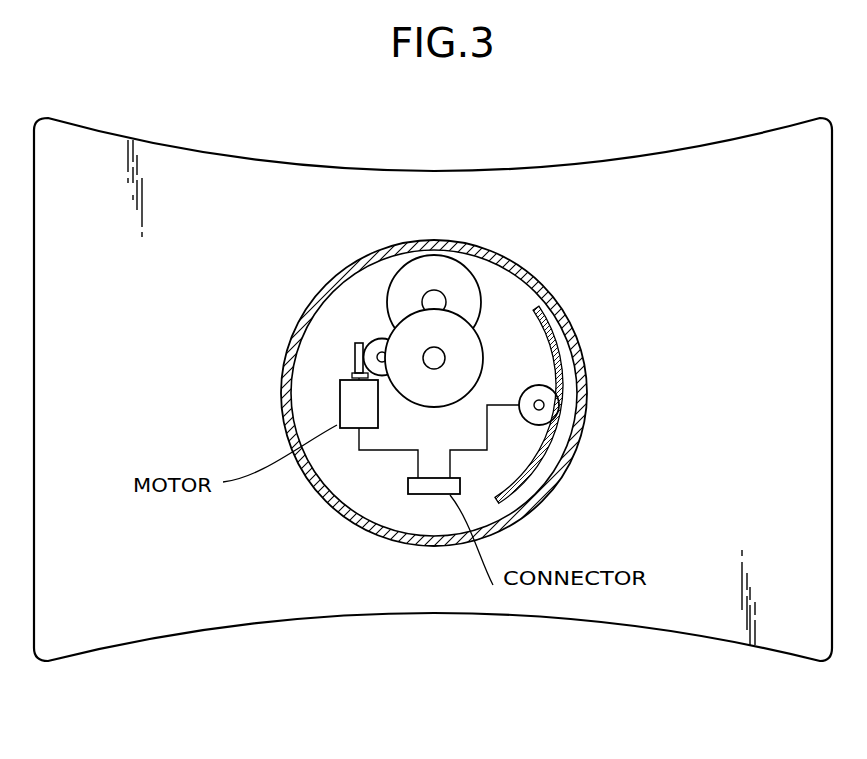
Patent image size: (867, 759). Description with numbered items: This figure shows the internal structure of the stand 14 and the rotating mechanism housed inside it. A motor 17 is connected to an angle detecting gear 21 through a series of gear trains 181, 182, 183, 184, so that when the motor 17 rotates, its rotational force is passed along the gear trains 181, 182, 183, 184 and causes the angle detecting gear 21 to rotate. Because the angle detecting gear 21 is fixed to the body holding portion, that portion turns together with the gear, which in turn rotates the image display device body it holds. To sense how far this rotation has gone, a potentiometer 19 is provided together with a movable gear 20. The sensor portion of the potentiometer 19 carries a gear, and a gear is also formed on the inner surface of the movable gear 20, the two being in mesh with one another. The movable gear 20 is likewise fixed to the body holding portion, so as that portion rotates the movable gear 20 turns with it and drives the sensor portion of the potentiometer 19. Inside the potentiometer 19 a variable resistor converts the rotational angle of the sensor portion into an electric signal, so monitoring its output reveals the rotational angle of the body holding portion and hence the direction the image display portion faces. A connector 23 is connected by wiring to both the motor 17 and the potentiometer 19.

The stand 14 is at (150, 610).
The motor 17 is at (355, 405).
The potentiometer 19 is at (548, 400).
The movable gear 20 is at (557, 320).
The angle detecting gear 21 is at (507, 265).
The connector 23 is at (430, 487).
The gear train 181 is at (355, 360).
The gear train 182 is at (372, 340).
The gear train 183 is at (405, 342).
The gear train 184 is at (403, 283).